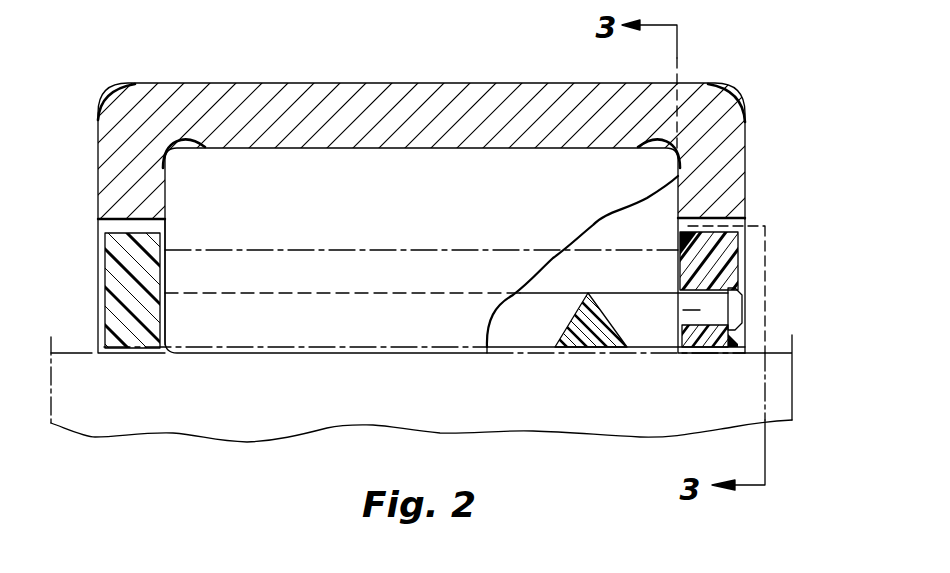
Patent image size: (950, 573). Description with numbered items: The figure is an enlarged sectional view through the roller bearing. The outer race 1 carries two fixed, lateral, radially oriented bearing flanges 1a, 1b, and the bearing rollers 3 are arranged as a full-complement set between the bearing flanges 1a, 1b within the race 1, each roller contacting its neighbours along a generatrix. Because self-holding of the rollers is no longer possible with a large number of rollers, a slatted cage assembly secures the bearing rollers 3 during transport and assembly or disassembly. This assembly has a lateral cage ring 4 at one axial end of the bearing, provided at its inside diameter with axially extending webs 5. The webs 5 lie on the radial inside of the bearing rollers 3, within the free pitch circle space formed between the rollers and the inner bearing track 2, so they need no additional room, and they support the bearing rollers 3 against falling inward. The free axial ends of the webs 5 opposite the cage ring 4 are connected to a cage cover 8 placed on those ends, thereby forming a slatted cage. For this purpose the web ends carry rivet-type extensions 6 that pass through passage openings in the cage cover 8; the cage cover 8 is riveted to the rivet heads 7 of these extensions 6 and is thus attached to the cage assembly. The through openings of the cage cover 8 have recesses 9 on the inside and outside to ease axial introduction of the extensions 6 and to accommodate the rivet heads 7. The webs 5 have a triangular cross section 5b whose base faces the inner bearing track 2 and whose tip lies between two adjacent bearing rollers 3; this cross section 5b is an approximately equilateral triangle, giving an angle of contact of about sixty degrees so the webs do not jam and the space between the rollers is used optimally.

The outer race 1 is at (277, 104).
The bearing flange 1a is at (130, 218).
The bearing flange 1b is at (730, 212).
The inner bearing track 2 is at (68, 354).
The bearing roller 3 is at (398, 170).
The cage ring 4 is at (120, 283).
The web 5 is at (640, 347).
The cross section of the cage web 5b is at (598, 348).
The extension 6 is at (700, 310).
The rivet head 7 is at (737, 304).
The cage cover 8 is at (718, 257).
The recess 9 is at (692, 341).